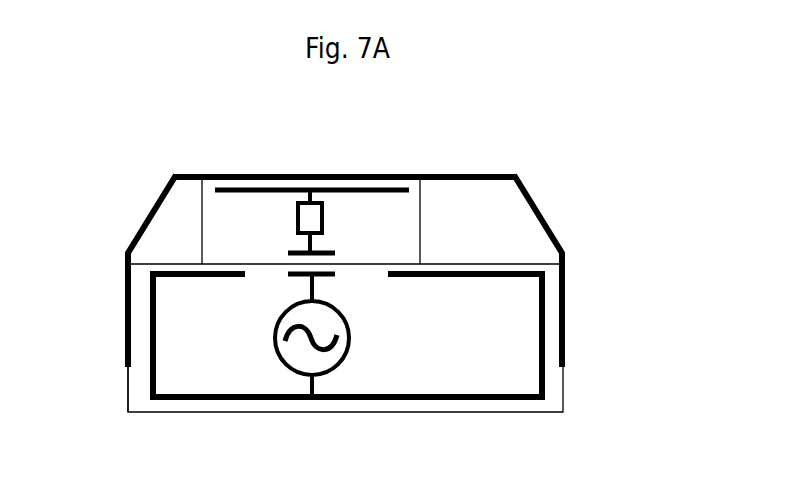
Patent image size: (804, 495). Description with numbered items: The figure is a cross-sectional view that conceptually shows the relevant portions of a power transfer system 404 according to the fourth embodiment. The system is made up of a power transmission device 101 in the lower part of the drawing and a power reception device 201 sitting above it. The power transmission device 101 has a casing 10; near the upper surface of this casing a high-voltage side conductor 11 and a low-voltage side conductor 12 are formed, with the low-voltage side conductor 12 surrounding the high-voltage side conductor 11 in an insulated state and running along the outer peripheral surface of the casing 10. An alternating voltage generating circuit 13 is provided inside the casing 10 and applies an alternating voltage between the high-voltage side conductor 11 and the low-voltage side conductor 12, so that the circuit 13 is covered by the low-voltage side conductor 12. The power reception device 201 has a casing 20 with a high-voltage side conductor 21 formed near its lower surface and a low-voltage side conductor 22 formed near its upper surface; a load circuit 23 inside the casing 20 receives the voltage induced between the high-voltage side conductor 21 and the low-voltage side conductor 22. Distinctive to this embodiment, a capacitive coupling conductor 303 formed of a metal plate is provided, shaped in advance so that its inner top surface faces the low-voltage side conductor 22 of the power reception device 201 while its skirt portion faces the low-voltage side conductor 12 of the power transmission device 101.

The power transfer system 404 is at (474, 149).
The power reception device 201 is at (184, 220).
The capacitive coupling conductor 303 is at (540, 208).
The casing 20 is at (420, 225).
The low-voltage side conductor 22 is at (290, 188).
The load circuit 23 is at (297, 218).
The high-voltage side conductor 21 is at (327, 250).
The high-voltage side conductor 11 is at (300, 275).
The alternating voltage generating circuit 13 is at (349, 330).
The low-voltage side conductor 12 is at (545, 327).
The casing 10 is at (563, 412).
The power transmission device 101 is at (116, 385).